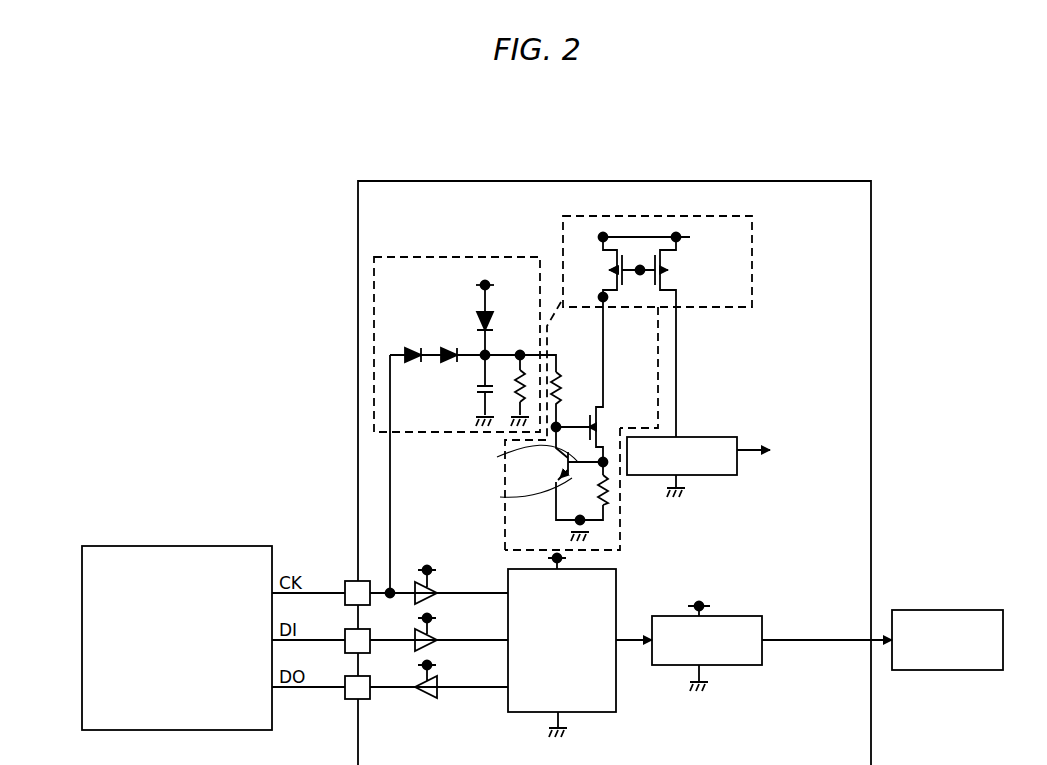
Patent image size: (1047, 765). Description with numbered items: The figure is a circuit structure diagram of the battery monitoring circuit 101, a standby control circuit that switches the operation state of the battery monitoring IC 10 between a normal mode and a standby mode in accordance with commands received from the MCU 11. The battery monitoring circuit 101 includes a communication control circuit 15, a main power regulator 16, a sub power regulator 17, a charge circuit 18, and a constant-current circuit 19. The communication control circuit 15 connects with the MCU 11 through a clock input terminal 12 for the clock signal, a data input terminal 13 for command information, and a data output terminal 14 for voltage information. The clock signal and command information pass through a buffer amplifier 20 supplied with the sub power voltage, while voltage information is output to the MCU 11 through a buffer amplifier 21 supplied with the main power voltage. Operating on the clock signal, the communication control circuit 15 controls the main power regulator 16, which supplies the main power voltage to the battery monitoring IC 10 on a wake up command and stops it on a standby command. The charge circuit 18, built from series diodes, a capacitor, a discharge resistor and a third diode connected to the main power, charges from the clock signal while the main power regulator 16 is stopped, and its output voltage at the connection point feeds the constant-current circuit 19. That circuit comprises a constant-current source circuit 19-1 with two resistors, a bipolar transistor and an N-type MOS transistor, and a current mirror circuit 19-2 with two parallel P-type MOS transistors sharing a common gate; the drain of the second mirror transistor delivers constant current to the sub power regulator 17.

The battery monitoring circuit 101 is at (590, 181).
The charge circuit 18 is at (432, 257).
The constant-current circuit 19 is at (752, 276).
The constant-current source circuit 19-1 is at (543, 504).
The current mirror circuit 19-2 is at (637, 305).
The sub power regulator 17 is at (706, 437).
The communication control circuit 15 is at (616, 600).
The main power regulator 16 is at (670, 616).
The battery monitoring IC 10 is at (960, 610).
The MCU 11 is at (145, 552).
The clock input terminal 12 is at (352, 581).
The data input terminal 13 is at (343, 629).
The data output terminal 14 is at (357, 690).
The buffer amplifier 20 is at (418, 638).
The buffer amplifier 21 is at (425, 690).